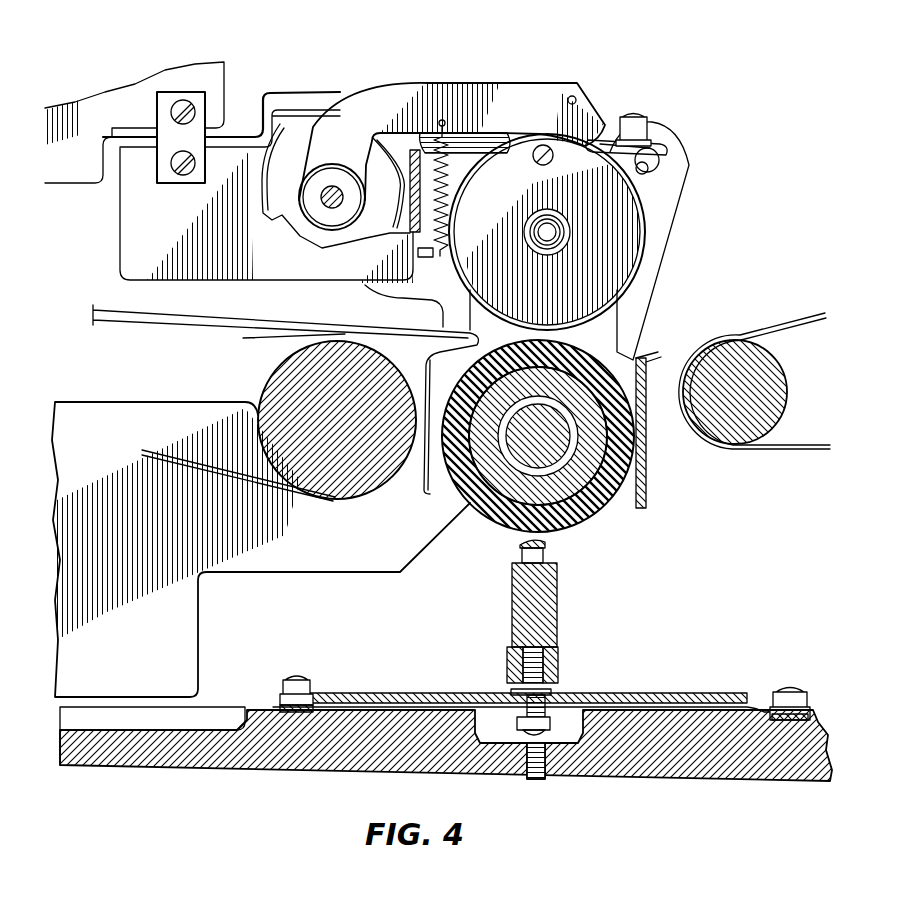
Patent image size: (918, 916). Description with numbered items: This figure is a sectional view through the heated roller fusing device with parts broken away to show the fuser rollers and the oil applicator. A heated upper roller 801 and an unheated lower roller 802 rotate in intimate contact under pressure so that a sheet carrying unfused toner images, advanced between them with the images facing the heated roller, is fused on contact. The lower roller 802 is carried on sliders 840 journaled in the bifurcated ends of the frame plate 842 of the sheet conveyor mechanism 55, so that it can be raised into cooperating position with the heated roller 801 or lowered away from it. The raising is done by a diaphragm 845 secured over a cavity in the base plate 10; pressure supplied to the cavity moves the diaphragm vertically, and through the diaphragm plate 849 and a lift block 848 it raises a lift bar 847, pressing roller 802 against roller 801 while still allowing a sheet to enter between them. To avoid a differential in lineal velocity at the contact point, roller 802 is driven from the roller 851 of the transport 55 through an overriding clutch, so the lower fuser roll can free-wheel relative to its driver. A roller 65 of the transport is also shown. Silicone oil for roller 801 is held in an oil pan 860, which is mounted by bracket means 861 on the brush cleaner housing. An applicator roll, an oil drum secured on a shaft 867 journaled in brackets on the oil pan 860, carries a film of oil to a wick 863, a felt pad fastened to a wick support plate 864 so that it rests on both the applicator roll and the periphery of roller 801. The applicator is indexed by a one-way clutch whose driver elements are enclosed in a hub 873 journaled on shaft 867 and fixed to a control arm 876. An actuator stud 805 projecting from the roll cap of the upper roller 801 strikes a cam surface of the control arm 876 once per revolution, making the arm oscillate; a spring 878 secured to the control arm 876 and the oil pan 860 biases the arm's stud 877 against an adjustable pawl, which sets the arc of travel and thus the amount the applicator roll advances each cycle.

The base plate 10 is at (648, 781).
The sheet conveyor mechanism 55 is at (195, 337).
The roller 65 is at (751, 330).
The heated upper roller 801 is at (652, 286).
The unheated lower roller 802 is at (603, 518).
The actuator stud 805 is at (543, 167).
The slider 840 is at (520, 549).
The frame plate 842 is at (183, 627).
The diaphragm 845 is at (773, 706).
The lift bar 847 is at (557, 598).
The lift block 848 is at (507, 666).
The diaphragm plate 849 is at (645, 700).
The roller 851 is at (357, 452).
The oil pan 860 is at (112, 201).
The bracket means 861 is at (200, 112).
The wick 863 is at (664, 150).
The wick support plate 864 is at (605, 136).
The shaft 867 is at (313, 206).
The hub 873 is at (361, 163).
The control arm 876 is at (545, 84).
The stud 877 is at (580, 98).
The spring 878 is at (445, 123).